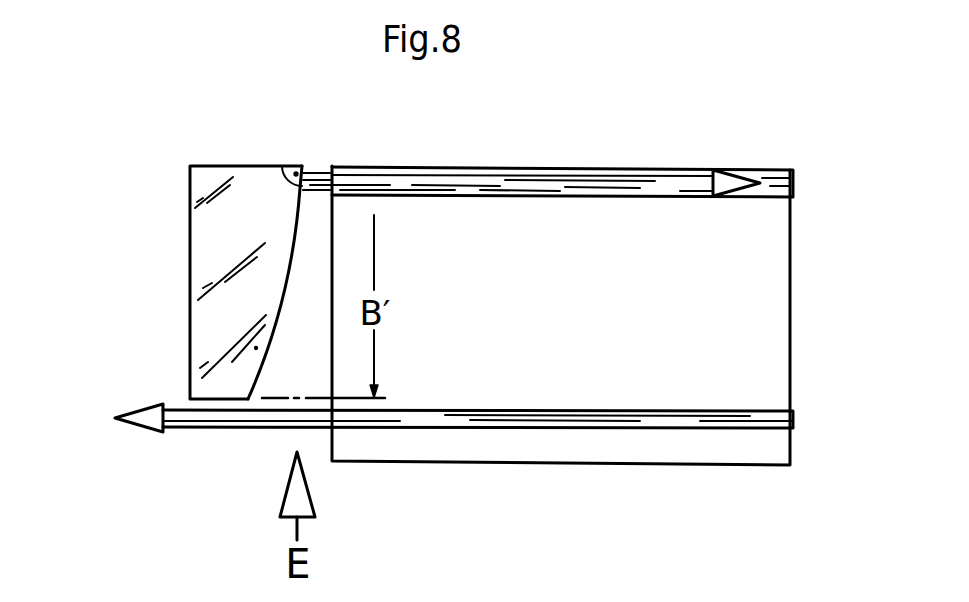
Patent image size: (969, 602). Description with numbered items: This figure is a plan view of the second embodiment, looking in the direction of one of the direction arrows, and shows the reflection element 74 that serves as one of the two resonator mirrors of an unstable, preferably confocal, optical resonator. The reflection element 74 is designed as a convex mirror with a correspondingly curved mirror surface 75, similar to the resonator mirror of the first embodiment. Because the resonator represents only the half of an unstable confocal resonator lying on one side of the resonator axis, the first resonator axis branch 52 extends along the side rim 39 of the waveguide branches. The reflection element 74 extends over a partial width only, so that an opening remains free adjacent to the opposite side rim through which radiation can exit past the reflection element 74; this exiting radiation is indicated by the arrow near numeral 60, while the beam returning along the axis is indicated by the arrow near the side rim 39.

The first resonator axis branch 52 is at (372, 167).
The reflection element 74 is at (222, 238).
The curved mirror surface 75 is at (268, 316).
The reflected light beam 60 is at (236, 428).
The side rim 39 is at (735, 170).